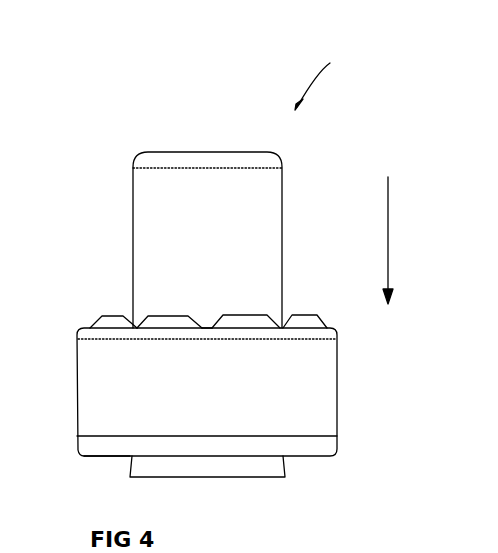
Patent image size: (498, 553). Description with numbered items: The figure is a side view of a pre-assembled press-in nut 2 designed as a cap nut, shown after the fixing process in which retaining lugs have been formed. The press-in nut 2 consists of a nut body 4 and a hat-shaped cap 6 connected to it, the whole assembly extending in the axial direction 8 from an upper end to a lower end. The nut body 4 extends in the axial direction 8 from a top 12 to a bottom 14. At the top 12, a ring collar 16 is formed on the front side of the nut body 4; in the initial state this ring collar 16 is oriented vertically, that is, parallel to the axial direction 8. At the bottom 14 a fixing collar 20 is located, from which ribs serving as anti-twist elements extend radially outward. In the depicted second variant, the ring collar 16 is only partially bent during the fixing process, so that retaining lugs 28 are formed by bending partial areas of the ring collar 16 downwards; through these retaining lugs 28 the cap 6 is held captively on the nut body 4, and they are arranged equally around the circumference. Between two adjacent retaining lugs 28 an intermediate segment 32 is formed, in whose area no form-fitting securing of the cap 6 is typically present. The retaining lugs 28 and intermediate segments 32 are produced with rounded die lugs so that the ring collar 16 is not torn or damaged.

The press-in nut 2 is at (358, 72).
The nut body 4 is at (317, 398).
The cap 6 is at (337, 203).
The axial direction 8 is at (388, 233).
The top 12 is at (88, 327).
The bottom 14 is at (108, 458).
The ring collar 16 is at (300, 317).
The fixing collar 20 is at (283, 478).
The retaining lugs 28 is at (162, 316).
The intermediate segment 32 is at (205, 326).